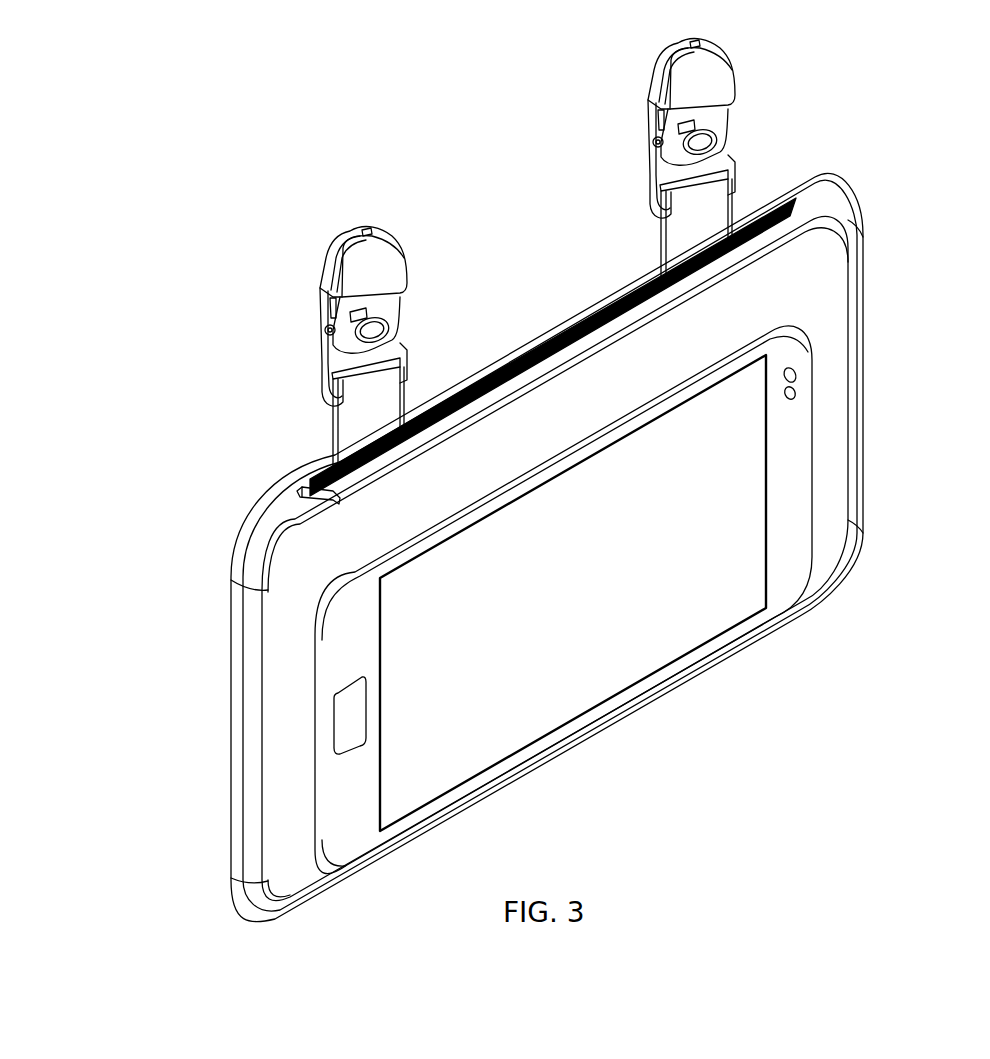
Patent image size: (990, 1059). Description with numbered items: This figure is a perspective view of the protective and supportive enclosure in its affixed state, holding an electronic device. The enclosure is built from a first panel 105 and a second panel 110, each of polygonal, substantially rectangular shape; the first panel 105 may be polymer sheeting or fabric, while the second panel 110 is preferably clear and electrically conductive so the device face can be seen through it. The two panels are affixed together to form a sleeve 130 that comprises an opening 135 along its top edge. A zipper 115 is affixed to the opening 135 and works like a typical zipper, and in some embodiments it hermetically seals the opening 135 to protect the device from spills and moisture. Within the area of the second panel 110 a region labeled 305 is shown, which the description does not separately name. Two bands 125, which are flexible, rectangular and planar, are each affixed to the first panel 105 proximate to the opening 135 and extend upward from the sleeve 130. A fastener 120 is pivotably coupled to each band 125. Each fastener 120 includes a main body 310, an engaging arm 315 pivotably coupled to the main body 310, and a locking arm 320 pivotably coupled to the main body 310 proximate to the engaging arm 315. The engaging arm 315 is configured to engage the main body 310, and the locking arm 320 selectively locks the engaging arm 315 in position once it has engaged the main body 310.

The first panel 105 is at (240, 535).
The second panel 110 is at (862, 220).
The zipper 115 is at (343, 503).
The fastener 120 is at (489, 204).
The band 125 is at (333, 447).
The sleeve 130 is at (892, 355).
The opening 135 is at (771, 212).
The display screen 305 is at (640, 568).
The main body 310 is at (318, 283).
The engaging arm 315 is at (406, 258).
The locking arm 320 is at (406, 330).